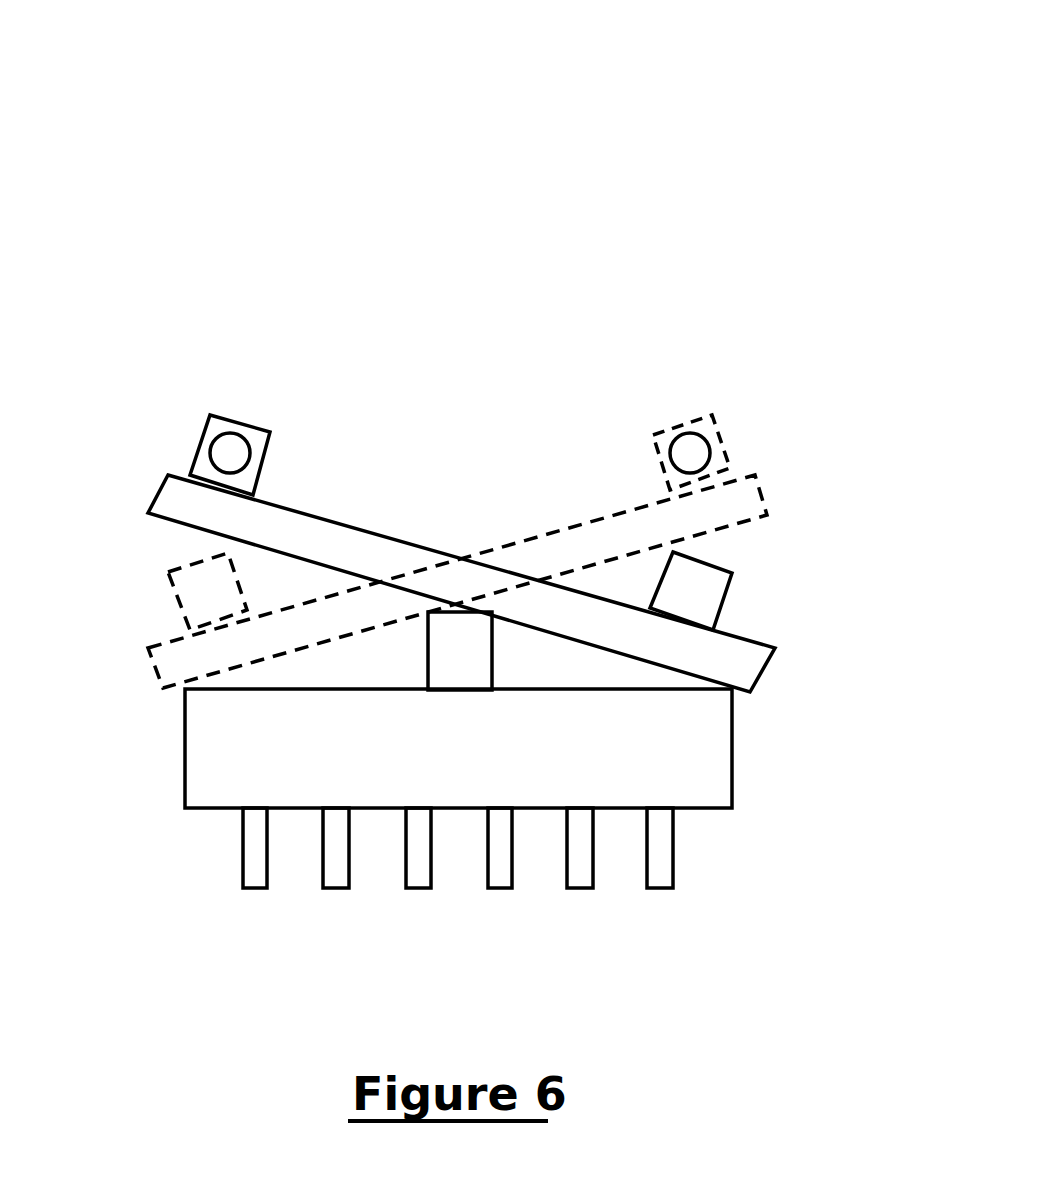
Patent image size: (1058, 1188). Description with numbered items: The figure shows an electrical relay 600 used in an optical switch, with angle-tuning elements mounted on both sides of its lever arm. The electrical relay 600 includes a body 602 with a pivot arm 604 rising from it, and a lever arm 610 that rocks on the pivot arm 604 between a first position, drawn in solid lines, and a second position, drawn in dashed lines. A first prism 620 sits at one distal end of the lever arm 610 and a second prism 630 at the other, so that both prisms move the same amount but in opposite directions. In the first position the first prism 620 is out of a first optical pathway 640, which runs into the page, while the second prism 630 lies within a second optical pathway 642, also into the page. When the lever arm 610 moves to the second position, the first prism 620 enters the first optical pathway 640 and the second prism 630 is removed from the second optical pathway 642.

The electrical relay 600 is at (800, 143).
The body 602 is at (708, 758).
The pivot arm 604 is at (462, 640).
The lever arm 610 is at (340, 540).
The first prism 620 is at (728, 605).
The second prism 630 is at (208, 430).
The first optical pathway 640 is at (690, 435).
The second optical pathway 642 is at (255, 430).